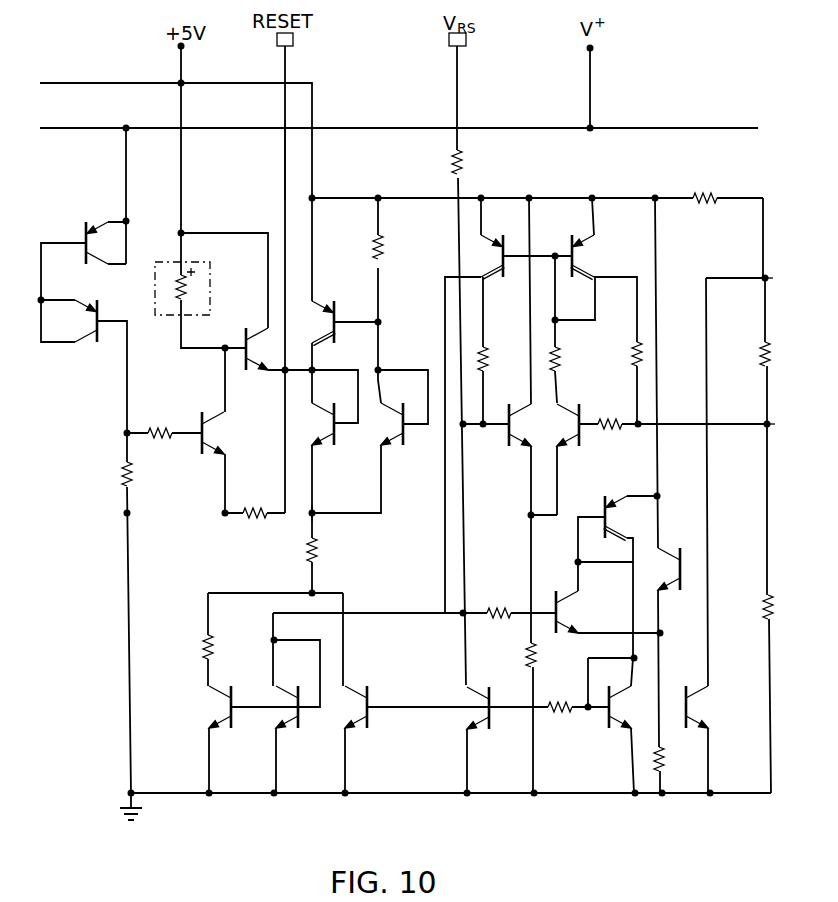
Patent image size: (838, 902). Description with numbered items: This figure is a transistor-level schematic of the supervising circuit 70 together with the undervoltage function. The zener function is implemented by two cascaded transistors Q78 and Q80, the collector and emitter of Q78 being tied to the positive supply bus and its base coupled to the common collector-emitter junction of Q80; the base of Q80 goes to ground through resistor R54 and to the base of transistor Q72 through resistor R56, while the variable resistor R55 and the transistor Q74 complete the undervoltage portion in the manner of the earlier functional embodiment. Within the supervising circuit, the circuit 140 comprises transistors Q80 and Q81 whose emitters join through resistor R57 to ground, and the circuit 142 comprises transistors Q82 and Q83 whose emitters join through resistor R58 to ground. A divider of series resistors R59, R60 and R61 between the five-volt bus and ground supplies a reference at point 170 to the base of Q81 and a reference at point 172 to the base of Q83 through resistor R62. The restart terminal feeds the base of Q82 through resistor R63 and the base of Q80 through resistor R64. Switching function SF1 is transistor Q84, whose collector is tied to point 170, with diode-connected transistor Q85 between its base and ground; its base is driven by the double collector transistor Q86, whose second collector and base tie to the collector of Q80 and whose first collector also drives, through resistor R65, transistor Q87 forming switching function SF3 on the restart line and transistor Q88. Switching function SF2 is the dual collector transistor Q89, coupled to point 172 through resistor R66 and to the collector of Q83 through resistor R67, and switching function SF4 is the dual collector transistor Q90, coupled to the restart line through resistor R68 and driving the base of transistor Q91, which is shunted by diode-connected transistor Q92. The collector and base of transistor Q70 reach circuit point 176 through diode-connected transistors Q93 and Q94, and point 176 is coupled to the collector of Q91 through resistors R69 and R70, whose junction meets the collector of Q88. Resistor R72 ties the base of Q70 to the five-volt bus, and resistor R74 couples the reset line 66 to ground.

The transistor Q78 is at (97, 217).
The transistor Q80 is at (87, 300).
The variable resistor R55 is at (155, 267).
The transistor Q74 is at (254, 328).
The transistor Q72 is at (205, 410).
The resistor R56 is at (167, 428).
The resistor R54 is at (135, 468).
The resistor R74 is at (262, 498).
The reset line 66 is at (283, 167).
The transistor Q70 is at (330, 301).
The resistor R72 is at (390, 256).
The transistor Q93 is at (326, 450).
The transistor Q94 is at (387, 406).
The circuit point 176 is at (314, 513).
The supervising circuit 70 is at (428, 543).
The resistor R69 is at (322, 555).
The resistor R70 is at (206, 649).
The transistor Q91 is at (220, 679).
The transistor Q92 is at (285, 680).
The transistor Q88 is at (357, 680).
The resistor R63 is at (470, 168).
The dual collector transistor Q90 is at (489, 238).
The dual collector transistor Q89 is at (574, 235).
The switching function SF2 is at (640, 256).
The switching function SF4 is at (519, 316).
The resistor R68 is at (490, 350).
The resistor R67 is at (565, 364).
The resistor R66 is at (632, 352).
The transistor Q82 is at (526, 400).
The transistor Q83 is at (567, 399).
The circuit 142 is at (556, 440).
The resistor R62 is at (621, 424).
The resistor R59 is at (701, 195).
The series connection point 170 is at (763, 277).
The resistor R60 is at (759, 347).
The series connection point 172 is at (763, 422).
The double collector transistor Q86 is at (605, 494).
The transistor Q81 is at (666, 546).
The circuit 140 is at (616, 606).
The resistor R64 is at (502, 596).
The resistor R58 is at (527, 654).
The switching function SF3 is at (512, 678).
The resistor R65 is at (566, 700).
The switching function SF1 is at (696, 678).
The transistor Q84 is at (705, 708).
The transistor Q85 is at (615, 735).
The transistor Q87 is at (480, 735).
The resistor R57 is at (668, 754).
The resistor R61 is at (765, 605).